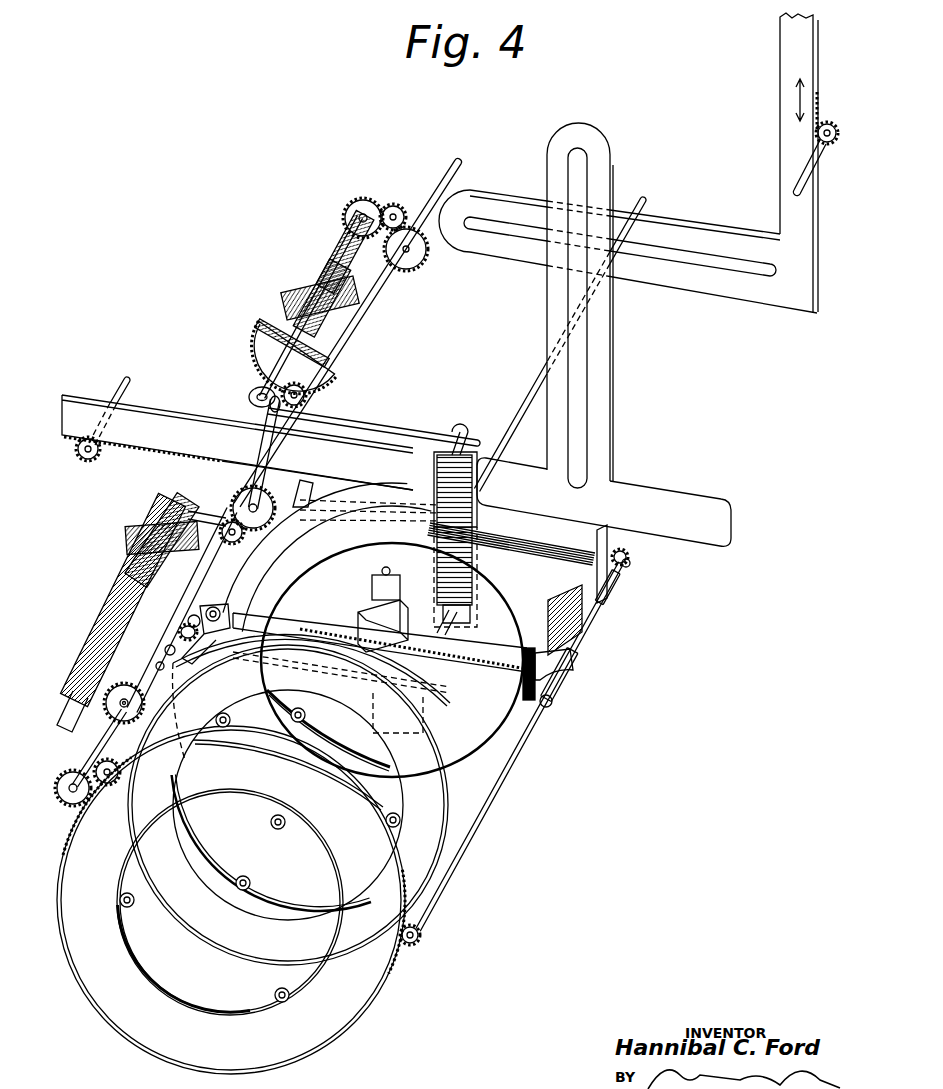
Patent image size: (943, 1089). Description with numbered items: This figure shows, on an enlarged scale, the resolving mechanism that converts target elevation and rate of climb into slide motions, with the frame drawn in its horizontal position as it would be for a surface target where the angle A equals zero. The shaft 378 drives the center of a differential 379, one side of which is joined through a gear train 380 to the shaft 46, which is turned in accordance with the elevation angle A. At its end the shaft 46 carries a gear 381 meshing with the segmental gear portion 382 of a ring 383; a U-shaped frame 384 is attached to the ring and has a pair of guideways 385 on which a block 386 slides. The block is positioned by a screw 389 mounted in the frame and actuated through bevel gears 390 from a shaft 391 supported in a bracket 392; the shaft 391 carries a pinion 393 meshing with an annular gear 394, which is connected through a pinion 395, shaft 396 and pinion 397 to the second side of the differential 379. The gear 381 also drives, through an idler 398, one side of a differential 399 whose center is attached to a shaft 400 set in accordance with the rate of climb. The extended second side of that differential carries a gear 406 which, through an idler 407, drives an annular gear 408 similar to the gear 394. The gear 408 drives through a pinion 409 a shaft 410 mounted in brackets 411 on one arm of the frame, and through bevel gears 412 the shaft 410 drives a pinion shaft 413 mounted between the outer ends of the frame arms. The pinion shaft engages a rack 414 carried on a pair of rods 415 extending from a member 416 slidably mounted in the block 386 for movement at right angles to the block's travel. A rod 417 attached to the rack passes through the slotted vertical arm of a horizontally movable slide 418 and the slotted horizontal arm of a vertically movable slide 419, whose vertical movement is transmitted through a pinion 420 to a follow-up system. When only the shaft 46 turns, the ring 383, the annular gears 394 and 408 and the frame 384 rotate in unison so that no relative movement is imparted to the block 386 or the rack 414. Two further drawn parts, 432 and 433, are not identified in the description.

The shaft 46 is at (453, 167).
The shaft 378 is at (393, 431).
The differential 379 is at (292, 278).
The gear train 380 is at (410, 228).
The gear 381 is at (246, 491).
The segmental gear portion 382 is at (310, 480).
The ring 383 is at (493, 593).
The U-shaped frame 384 is at (295, 543).
The guideways 385 is at (530, 646).
The block 386 is at (352, 627).
The screw 389 is at (283, 620).
The bevel gears 390 is at (218, 602).
The shaft 391 is at (158, 667).
The bracket 392 is at (168, 630).
The pinion 393 is at (119, 779).
The annular gear 394 is at (442, 860).
The pinion 395 is at (140, 718).
The shaft 396 is at (162, 648).
The pinion 397 is at (310, 397).
The idler 398 is at (213, 519).
The differential 399 is at (138, 521).
The shaft 400 is at (133, 598).
The gear 406 is at (50, 693).
The idler 407 is at (83, 807).
The annular gear 408 is at (380, 980).
The pinion 409 is at (422, 931).
The shaft 410 is at (499, 790).
The brackets 411 is at (616, 590).
The bevel gears 412 is at (630, 555).
The pinion shaft 413 is at (528, 542).
The rack 414 is at (478, 505).
The rods 415 is at (440, 493).
The member 416 is at (372, 580).
The rod 417 is at (522, 405).
The horizontally movable slide 418 is at (666, 502).
The vertically movable slide 419 is at (735, 292).
The pinion 420 is at (815, 133).
The pinion 432 is at (88, 459).
The pin 433 is at (124, 385).